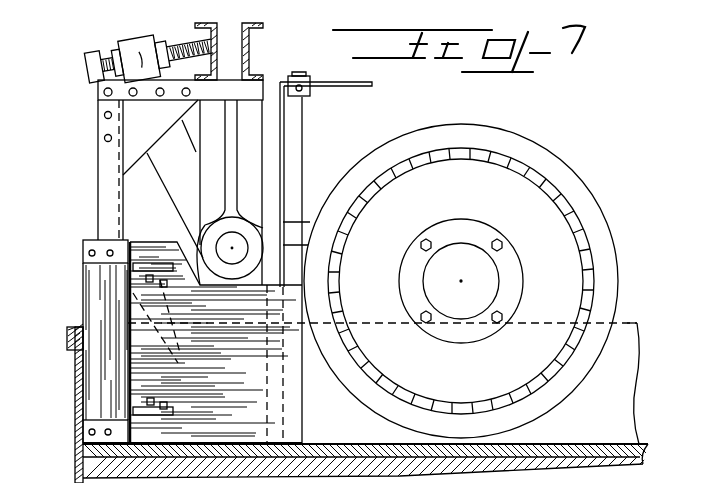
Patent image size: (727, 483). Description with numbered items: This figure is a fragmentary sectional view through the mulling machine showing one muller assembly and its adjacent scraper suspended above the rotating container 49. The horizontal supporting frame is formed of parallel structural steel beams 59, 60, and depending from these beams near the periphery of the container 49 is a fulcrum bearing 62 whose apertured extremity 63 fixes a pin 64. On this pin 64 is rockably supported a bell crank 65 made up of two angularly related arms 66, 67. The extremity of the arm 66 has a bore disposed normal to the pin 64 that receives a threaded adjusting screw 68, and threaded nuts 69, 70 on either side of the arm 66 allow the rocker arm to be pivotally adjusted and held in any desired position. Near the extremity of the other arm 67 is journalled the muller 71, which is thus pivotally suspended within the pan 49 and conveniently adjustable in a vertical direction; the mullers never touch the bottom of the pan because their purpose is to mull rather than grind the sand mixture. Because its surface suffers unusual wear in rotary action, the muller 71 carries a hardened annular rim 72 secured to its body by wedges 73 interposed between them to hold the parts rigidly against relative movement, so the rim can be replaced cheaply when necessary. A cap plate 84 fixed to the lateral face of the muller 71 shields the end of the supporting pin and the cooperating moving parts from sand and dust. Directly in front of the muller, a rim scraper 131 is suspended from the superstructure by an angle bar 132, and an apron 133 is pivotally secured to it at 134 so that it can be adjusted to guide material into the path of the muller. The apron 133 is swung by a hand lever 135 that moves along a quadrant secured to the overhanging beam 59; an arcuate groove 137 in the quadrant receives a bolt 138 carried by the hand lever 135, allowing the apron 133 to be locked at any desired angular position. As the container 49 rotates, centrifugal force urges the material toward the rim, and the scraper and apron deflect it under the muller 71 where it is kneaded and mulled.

The container 49 is at (92, 375).
The structural steel beam 59 is at (253, 55).
The structural steel beam 60 is at (210, 23).
The fulcrum bearing 62 is at (250, 167).
The apertured extremity 63 is at (303, 232).
The pin 64 is at (222, 223).
The bell crank 65 is at (170, 203).
The arm 66 is at (185, 185).
The arm 67 is at (310, 213).
The threaded adjusting screw 68 is at (100, 56).
The threaded nut 69 is at (118, 47).
The threaded nut 70 is at (160, 43).
The muller 71 is at (538, 207).
The hardened annular rim 72 is at (598, 207).
The wedge 73 is at (590, 255).
The cap plate 84 is at (490, 285).
The rim scraper 131 is at (107, 400).
The angle bar 132 is at (110, 230).
The apron 133 is at (257, 428).
The pivot 134 is at (168, 380).
The hand lever 135 is at (282, 115).
The arcuate groove 137 is at (300, 80).
The bolt 138 is at (299, 77).